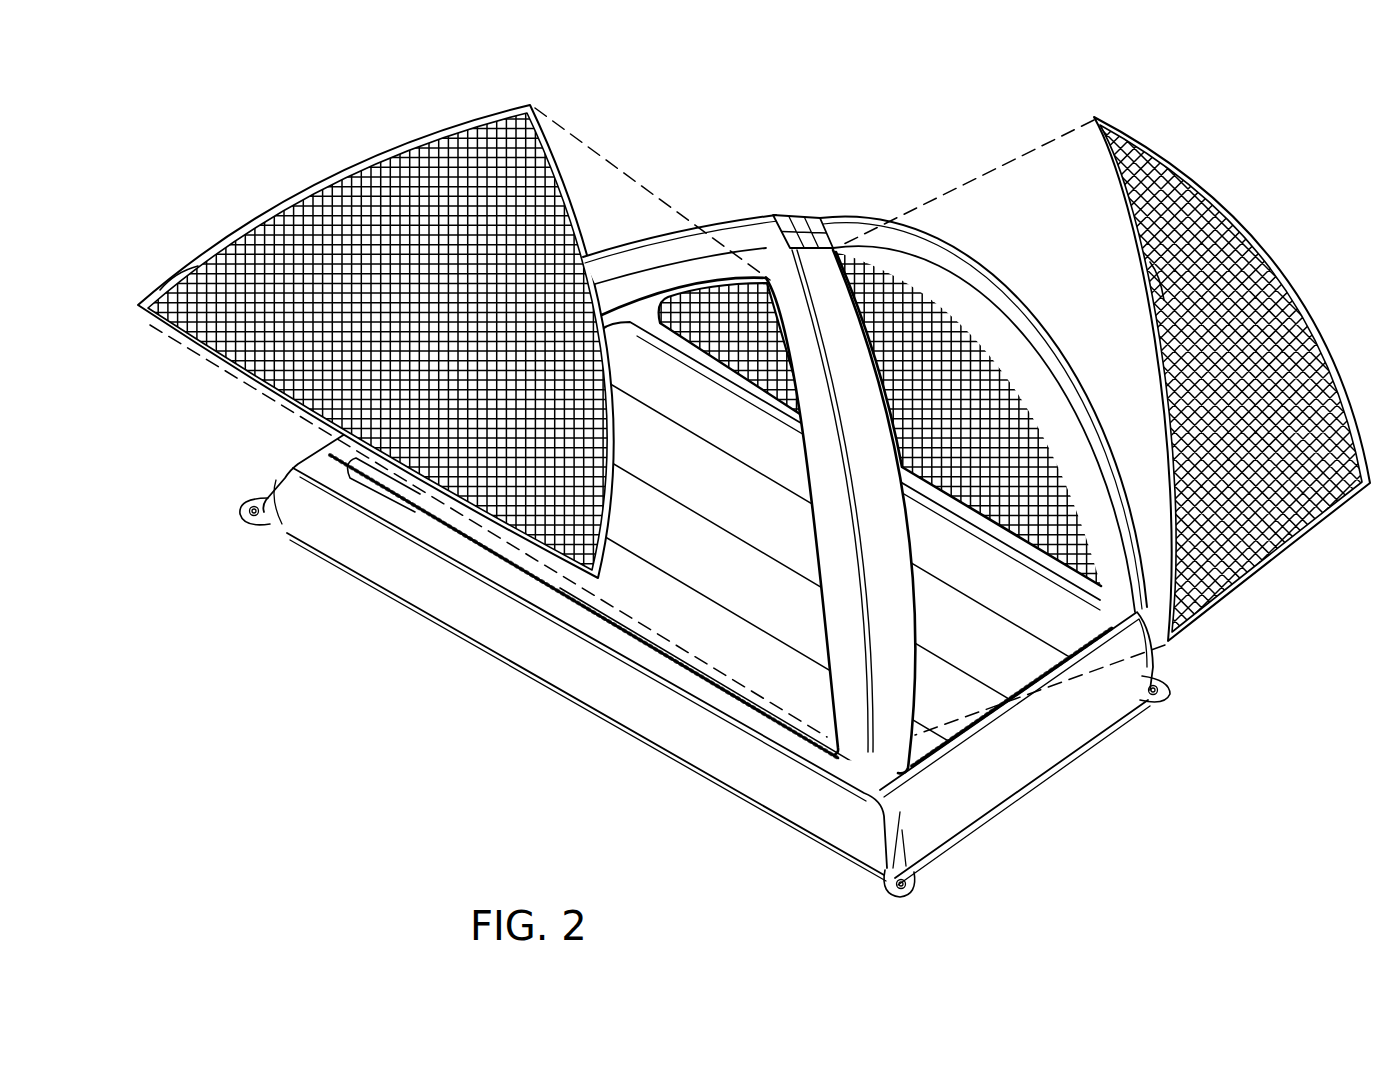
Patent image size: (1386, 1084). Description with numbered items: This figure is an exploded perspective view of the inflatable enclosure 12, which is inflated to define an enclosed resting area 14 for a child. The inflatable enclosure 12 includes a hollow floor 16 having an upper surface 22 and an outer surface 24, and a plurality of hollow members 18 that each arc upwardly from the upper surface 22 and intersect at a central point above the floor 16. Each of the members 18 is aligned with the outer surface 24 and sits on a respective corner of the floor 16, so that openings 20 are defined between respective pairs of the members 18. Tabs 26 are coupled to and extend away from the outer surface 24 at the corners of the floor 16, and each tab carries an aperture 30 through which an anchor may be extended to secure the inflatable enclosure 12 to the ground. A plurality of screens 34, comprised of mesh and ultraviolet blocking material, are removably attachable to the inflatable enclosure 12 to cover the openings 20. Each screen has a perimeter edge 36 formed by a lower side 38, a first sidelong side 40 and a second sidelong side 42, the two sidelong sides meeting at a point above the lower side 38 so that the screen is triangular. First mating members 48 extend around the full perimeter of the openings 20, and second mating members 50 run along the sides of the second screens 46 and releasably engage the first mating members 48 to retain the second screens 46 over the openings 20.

The inflatable enclosure 12 is at (736, 404).
The enclosed resting area 14 is at (705, 644).
The floor 16 is at (1030, 640).
The members 18 is at (736, 404).
The openings 20 is at (760, 650).
The upper surface 22 is at (682, 546).
The outer surface 24 is at (458, 582).
The tabs 26 is at (240, 520).
The aperture 30 is at (250, 486).
The screens 34 is at (736, 342).
The perimeter edge 36 is at (453, 103).
The lower side 38 is at (417, 473).
The first sidelong side 40 is at (298, 168).
The second sidelong side 42 is at (567, 181).
The second screens 46 is at (245, 230).
The first mating members 48 is at (805, 745).
The second mating members 50 is at (195, 268).